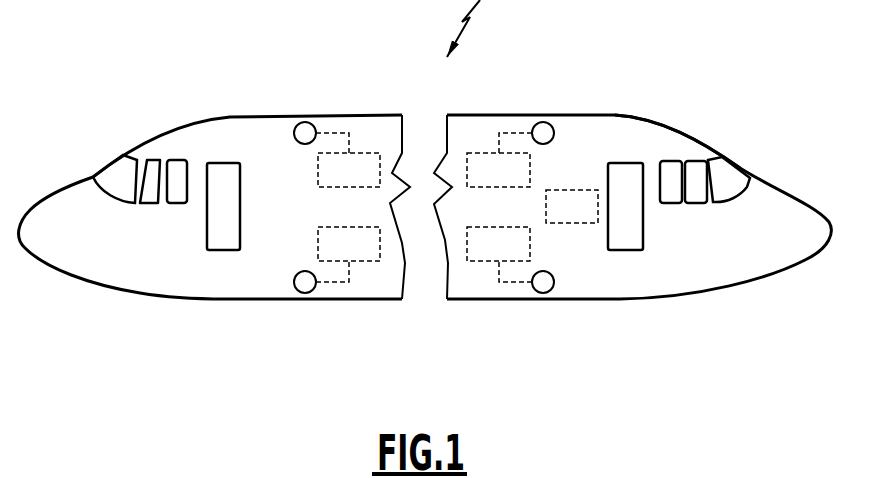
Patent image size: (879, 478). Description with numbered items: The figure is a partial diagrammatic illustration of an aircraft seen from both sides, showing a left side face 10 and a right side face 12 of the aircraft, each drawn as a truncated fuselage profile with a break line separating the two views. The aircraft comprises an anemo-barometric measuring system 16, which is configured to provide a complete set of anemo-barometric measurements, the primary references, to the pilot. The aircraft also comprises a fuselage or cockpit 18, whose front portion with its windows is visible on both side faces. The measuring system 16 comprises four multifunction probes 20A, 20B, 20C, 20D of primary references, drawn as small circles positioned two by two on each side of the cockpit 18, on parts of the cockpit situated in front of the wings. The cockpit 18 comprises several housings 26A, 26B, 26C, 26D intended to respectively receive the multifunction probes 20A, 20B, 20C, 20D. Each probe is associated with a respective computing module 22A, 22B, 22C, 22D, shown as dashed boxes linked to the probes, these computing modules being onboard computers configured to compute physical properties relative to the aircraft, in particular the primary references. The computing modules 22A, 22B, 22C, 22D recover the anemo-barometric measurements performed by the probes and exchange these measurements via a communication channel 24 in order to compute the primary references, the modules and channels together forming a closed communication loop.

The left side face 10 is at (215, 102).
The right side face 12 is at (602, 107).
The anemo-barometric measuring system 16 is at (475, 280).
The fuselage or cockpit 18 is at (653, 153).
The multifunction probe 20A is at (305, 282).
The multifunction probe 20B is at (306, 133).
The multifunction probe 20C is at (543, 282).
The multifunction probe 20D is at (543, 133).
The computing module 22A is at (349, 244).
The computing module 22B is at (349, 170).
The computing module 22C is at (498, 244).
The computing module 22D is at (498, 170).
The communication channel 24 is at (572, 206).
The housing 26A is at (298, 291).
The housing 26B is at (300, 122).
The housing 26C is at (536, 290).
The housing 26D is at (533, 126).